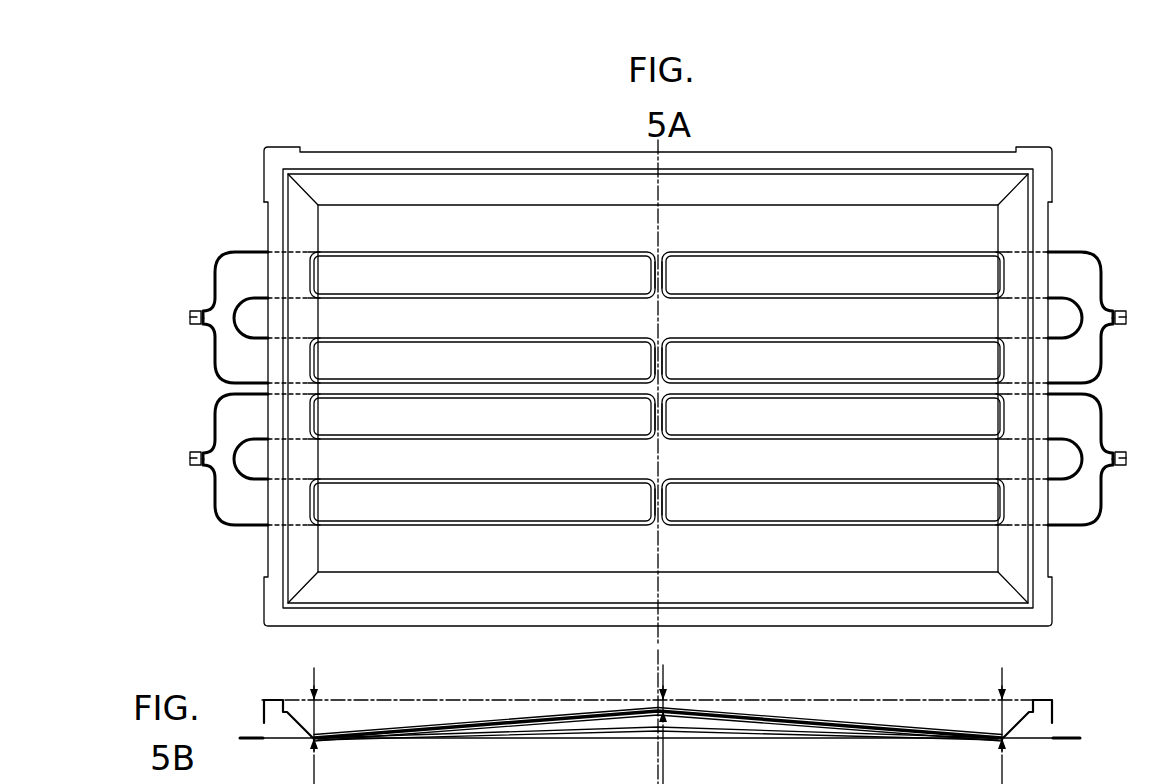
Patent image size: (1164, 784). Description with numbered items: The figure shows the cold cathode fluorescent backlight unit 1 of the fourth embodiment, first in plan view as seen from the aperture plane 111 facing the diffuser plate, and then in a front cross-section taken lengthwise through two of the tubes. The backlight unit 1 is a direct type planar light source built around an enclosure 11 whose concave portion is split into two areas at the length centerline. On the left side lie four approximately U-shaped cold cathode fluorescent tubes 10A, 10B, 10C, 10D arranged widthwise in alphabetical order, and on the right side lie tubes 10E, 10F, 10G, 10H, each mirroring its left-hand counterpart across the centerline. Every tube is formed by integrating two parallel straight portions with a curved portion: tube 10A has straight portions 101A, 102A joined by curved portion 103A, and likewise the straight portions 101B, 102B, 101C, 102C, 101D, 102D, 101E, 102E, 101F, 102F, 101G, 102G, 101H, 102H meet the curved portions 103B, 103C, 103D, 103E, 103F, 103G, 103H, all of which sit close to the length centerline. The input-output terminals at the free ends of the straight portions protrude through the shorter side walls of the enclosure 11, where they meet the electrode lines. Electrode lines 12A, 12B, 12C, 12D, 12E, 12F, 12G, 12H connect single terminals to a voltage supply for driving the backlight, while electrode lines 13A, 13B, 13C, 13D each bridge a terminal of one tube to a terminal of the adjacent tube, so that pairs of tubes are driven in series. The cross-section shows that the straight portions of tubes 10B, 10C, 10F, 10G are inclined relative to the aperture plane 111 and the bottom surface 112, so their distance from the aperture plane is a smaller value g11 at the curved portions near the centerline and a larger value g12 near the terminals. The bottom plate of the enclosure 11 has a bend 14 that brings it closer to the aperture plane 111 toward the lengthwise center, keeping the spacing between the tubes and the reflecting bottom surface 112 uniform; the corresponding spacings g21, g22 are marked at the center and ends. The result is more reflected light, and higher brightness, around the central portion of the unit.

In FIG. 5A, the backlight unit 1 is at (1054, 139).
In FIG. 5A, the enclosure 11 is at (927, 158).
In FIG. 5B, the enclosure 11 is at (1053, 710).
In FIG. 5B, the aperture plane 111 is at (915, 699).
In FIG. 5A, the bottom surface 112 is at (355, 218).
In FIG. 5B, the bottom surface 112 is at (602, 730).
In FIG. 5B, the bend 14 is at (655, 740).
In FIG. 5A, the cold cathode fluorescent tube 10A is at (320, 249).
In FIG. 5A, the cold cathode fluorescent tube 10B is at (320, 337).
In FIG. 5B, the cold cathode fluorescent tube 10B is at (658, 700).
In FIG. 5A, the cold cathode fluorescent tube 10C is at (319, 442).
In FIG. 5B, the cold cathode fluorescent tube 10C is at (513, 717).
In FIG. 5A, the cold cathode fluorescent tube 10D is at (319, 528).
In FIG. 5A, the cold cathode fluorescent tube 10E is at (996, 249).
In FIG. 5A, the cold cathode fluorescent tube 10F is at (996, 336).
In FIG. 5B, the cold cathode fluorescent tube 10F is at (830, 699).
In FIG. 5A, the cold cathode fluorescent tube 10G is at (996, 443).
In FIG. 5B, the cold cathode fluorescent tube 10G is at (835, 690).
In FIG. 5A, the cold cathode fluorescent tube 10H is at (996, 528).
In FIG. 5A, the electrode line 12A is at (213, 281).
In FIG. 5A, the electrode line 12B is at (213, 356).
In FIG. 5A, the electrode line 12C is at (213, 419).
In FIG. 5A, the electrode line 12D is at (214, 499).
In FIG. 5A, the electrode line 12E is at (1103, 282).
In FIG. 5A, the electrode line 12F is at (1103, 356).
In FIG. 5A, the electrode line 12G is at (1103, 419).
In FIG. 5A, the electrode line 12H is at (1103, 500).
In FIG. 5A, the electrode line 13A is at (252, 339).
In FIG. 5A, the electrode line 13B is at (250, 481).
In FIG. 5A, the electrode line 13C is at (1065, 340).
In FIG. 5A, the electrode line 13D is at (1066, 481).
In FIG. 5A, the straight portion 101A is at (441, 256).
In FIG. 5A, the straight portion 101B is at (441, 341).
In FIG. 5A, the straight portion 101C is at (441, 396).
In FIG. 5A, the straight portion 101D is at (441, 482).
In FIG. 5A, the straight portion 101E is at (878, 255).
In FIG. 5A, the straight portion 101F is at (878, 341).
In FIG. 5A, the straight portion 101G is at (878, 396).
In FIG. 5A, the straight portion 101H is at (878, 482).
In FIG. 5A, the straight portion 102A is at (433, 297).
In FIG. 5A, the straight portion 102B is at (435, 382).
In FIG. 5A, the straight portion 102C is at (436, 438).
In FIG. 5A, the straight portion 102D is at (436, 524).
In FIG. 5A, the straight portion 102E is at (884, 297).
In FIG. 5A, the straight portion 102F is at (884, 382).
In FIG. 5A, the straight portion 102G is at (884, 438).
In FIG. 5A, the straight portion 102H is at (884, 524).
In FIG. 5A, the curved portion 103A is at (655, 275).
In FIG. 5A, the curved portion 103B is at (655, 361).
In FIG. 5A, the curved portion 103C is at (655, 410).
In FIG. 5A, the curved portion 103D is at (655, 499).
In FIG. 5A, the curved portion 103E is at (662, 275).
In FIG. 5A, the curved portion 103F is at (662, 361).
In FIG. 5A, the curved portion 103G is at (662, 410).
In FIG. 5A, the curved portion 103H is at (662, 499).
In FIG. 5B, the distance g11 is at (686, 691).
In FIG. 5B, the distance g12 is at (679, 703).
In FIG. 5B, the gap at center g21 is at (686, 754).
In FIG. 5B, the gap at edge g22 is at (679, 769).